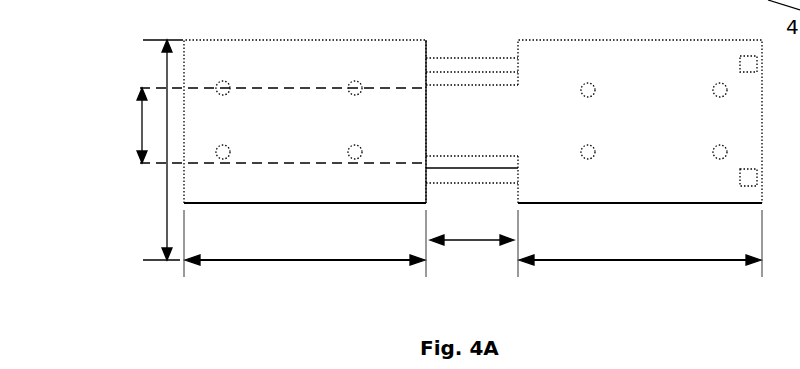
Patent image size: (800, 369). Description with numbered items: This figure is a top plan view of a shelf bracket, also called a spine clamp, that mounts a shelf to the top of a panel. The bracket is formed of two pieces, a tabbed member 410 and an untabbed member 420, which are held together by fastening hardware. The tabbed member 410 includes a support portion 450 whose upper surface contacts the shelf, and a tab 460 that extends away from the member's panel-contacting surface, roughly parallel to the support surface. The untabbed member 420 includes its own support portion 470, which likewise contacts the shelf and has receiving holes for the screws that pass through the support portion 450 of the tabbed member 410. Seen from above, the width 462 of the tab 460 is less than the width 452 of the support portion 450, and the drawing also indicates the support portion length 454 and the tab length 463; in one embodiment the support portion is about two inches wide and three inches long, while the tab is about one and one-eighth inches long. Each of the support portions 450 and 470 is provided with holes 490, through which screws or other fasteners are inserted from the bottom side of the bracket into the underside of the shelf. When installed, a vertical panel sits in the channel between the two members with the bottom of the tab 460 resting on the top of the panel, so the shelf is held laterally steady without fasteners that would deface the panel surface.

The tabbed member 410 is at (665, 196).
The untabbed member 420 is at (335, 203).
The support portion 450 is at (640, 121).
The width of support portion 452 is at (162, 207).
The support portion length 454 is at (230, 260).
The tab 460 is at (472, 120).
The width of tab 462 is at (142, 128).
The tab length 463 is at (458, 243).
The support portion 470 is at (283, 121).
The holes 490 is at (349, 84).